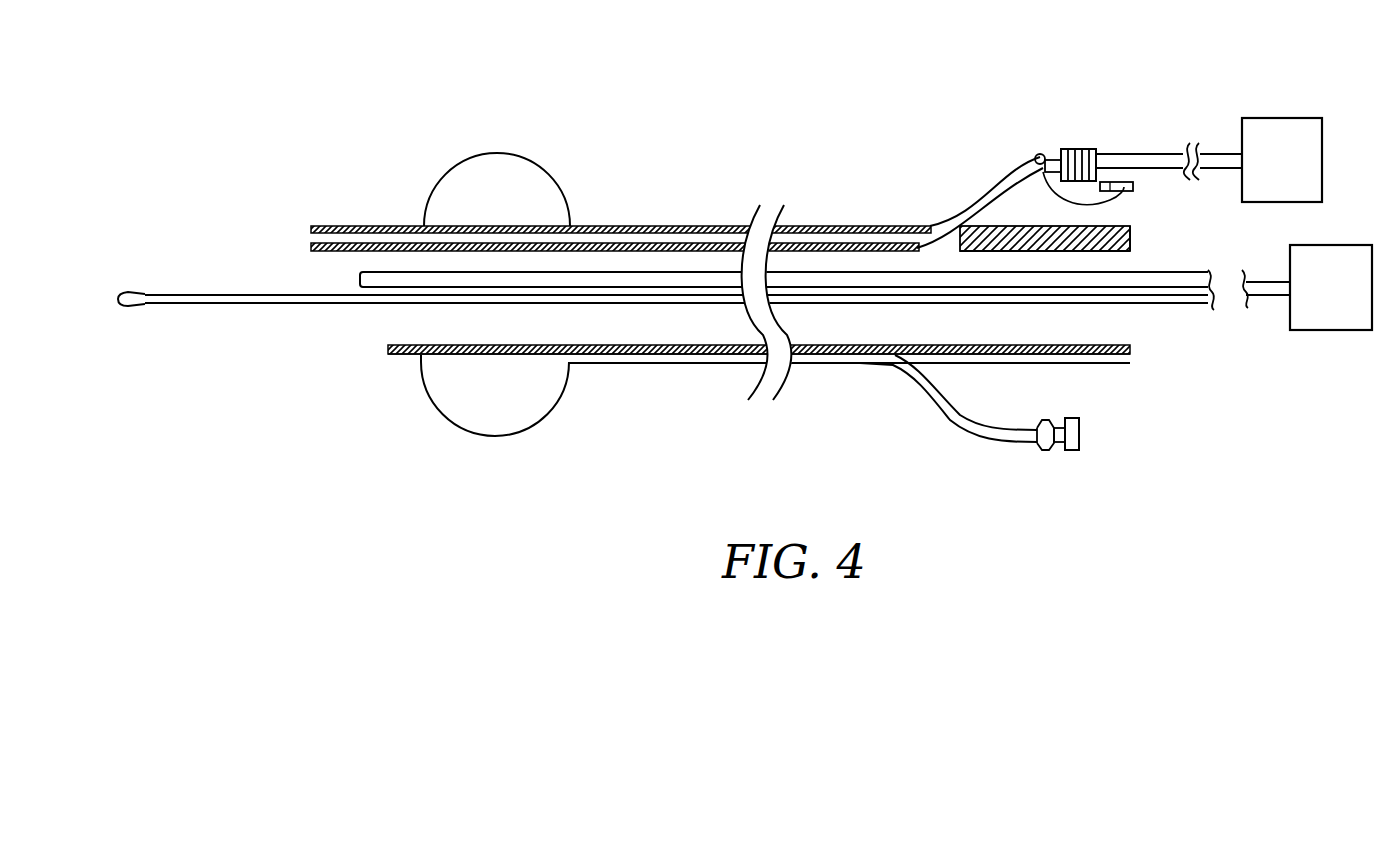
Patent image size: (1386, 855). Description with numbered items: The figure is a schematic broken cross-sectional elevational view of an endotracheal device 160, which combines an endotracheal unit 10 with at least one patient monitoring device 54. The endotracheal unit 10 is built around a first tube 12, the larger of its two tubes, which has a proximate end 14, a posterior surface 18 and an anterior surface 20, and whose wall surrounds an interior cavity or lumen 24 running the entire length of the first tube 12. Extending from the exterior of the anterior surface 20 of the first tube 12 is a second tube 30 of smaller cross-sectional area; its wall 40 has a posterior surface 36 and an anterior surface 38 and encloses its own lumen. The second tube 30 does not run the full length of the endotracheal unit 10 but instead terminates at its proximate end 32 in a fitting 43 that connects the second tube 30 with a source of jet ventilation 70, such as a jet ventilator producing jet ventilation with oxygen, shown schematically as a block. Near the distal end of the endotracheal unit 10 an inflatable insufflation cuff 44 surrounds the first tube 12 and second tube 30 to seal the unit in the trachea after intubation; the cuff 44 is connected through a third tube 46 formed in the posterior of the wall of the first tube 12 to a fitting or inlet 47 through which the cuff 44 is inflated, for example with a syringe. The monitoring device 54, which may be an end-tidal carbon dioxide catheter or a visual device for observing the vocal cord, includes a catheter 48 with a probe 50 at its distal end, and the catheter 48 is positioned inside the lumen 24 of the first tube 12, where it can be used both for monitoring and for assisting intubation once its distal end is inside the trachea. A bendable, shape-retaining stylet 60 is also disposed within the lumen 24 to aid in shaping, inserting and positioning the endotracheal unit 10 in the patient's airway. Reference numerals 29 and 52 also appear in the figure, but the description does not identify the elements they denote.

The endotracheal unit 10 is at (902, 168).
The first tube 12 is at (648, 355).
The proximate end 14 is at (1132, 238).
The posterior surface 18 is at (1027, 355).
The anterior surface 20 is at (1068, 227).
The lumen 24 is at (1115, 260).
The lumen 29 is at (1000, 237).
The second tube 30 is at (353, 224).
The proximate end 32 is at (993, 172).
The posterior surface 36 is at (965, 252).
The anterior surface 38 is at (930, 226).
The wall 40 is at (807, 226).
The fitting 43 is at (1073, 150).
The inflatable insufflation cuff 44 is at (527, 155).
The third tube 46 is at (672, 360).
The fitting or inlet 47 is at (1072, 450).
The catheter 48 is at (193, 304).
The probe 50 is at (127, 290).
The guidewire shaft 52 is at (242, 293).
The patient monitoring device 54 is at (1307, 287).
The stylet 60 is at (1198, 270).
The source of jet ventilation 70 is at (1209, 160).
The endotracheal device 160 is at (757, 125).